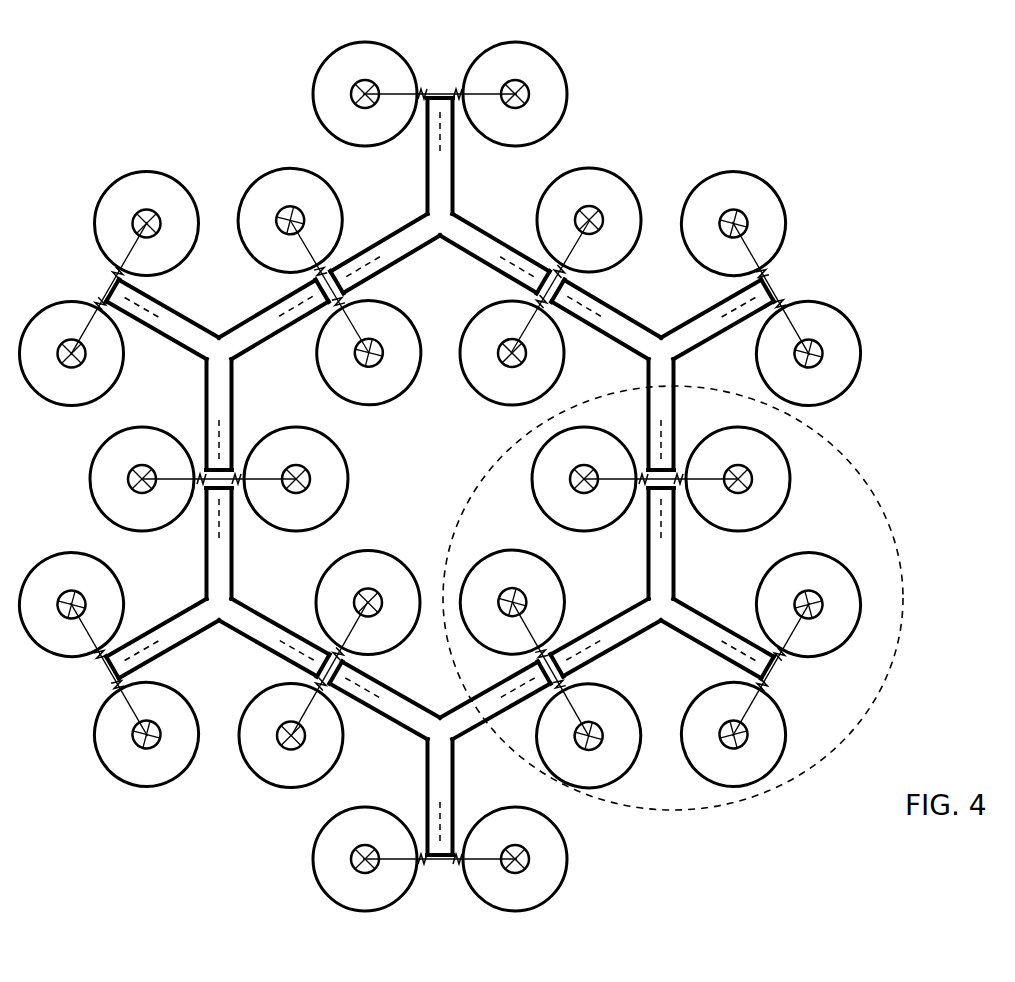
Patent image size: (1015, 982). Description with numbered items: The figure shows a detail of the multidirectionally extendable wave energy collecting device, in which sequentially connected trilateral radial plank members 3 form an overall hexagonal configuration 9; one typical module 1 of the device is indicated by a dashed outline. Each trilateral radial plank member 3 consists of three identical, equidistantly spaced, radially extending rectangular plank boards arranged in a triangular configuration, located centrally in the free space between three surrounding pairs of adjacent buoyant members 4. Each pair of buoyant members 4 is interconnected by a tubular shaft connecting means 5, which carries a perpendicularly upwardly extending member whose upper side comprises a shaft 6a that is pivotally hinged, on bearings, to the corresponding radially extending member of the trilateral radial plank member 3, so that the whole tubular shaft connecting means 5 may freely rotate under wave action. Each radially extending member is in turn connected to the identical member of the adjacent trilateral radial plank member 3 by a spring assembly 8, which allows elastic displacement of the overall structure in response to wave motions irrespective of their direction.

The module 1 is at (874, 450).
The trilateral radial plank member 3 is at (480, 264).
The buoyant member 4 is at (138, 176).
The tubular shaft connecting means 5 is at (122, 270).
The shaft 6a is at (168, 304).
The spring assembly 8 is at (345, 663).
The hexagonal configuration 9 is at (188, 403).